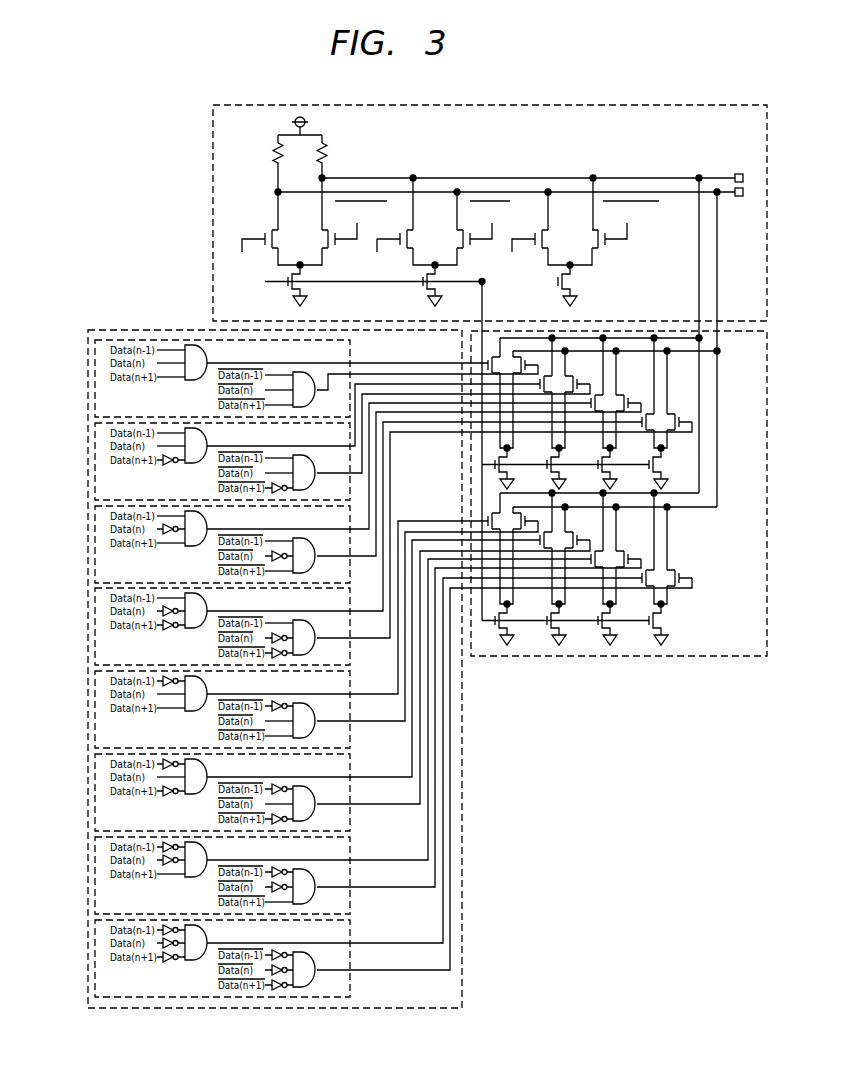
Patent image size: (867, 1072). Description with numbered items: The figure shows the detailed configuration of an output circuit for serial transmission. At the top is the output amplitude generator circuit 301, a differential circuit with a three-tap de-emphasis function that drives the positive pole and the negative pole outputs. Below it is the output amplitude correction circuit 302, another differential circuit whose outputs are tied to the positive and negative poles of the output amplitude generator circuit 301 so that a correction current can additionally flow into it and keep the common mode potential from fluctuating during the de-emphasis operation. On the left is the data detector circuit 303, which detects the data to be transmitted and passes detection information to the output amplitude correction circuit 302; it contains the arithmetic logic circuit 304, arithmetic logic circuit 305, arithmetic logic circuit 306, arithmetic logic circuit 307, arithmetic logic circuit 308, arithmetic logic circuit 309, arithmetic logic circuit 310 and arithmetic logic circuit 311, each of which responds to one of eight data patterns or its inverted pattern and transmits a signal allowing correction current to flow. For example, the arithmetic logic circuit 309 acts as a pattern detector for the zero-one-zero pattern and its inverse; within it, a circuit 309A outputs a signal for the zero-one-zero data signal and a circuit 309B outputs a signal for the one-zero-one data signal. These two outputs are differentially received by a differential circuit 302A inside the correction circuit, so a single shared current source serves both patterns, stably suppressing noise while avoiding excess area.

The output amplitude generator circuit 301 is at (690, 105).
The output amplitude correction circuit 302 is at (619, 461).
The differential circuit 302A is at (567, 597).
The data detector circuit 303 is at (358, 646).
The arithmetic logic circuit 304 is at (93, 373).
The arithmetic logic circuit 305 is at (93, 456).
The arithmetic logic circuit 306 is at (93, 539).
The arithmetic logic circuit 307 is at (93, 621).
The arithmetic logic circuit 308 is at (93, 704).
The arithmetic logic circuit 309 is at (279, 793).
The circuit 309A is at (190, 796).
The circuit 309B is at (322, 808).
The arithmetic logic circuit 310 is at (93, 870).
The arithmetic logic circuit 311 is at (93, 953).